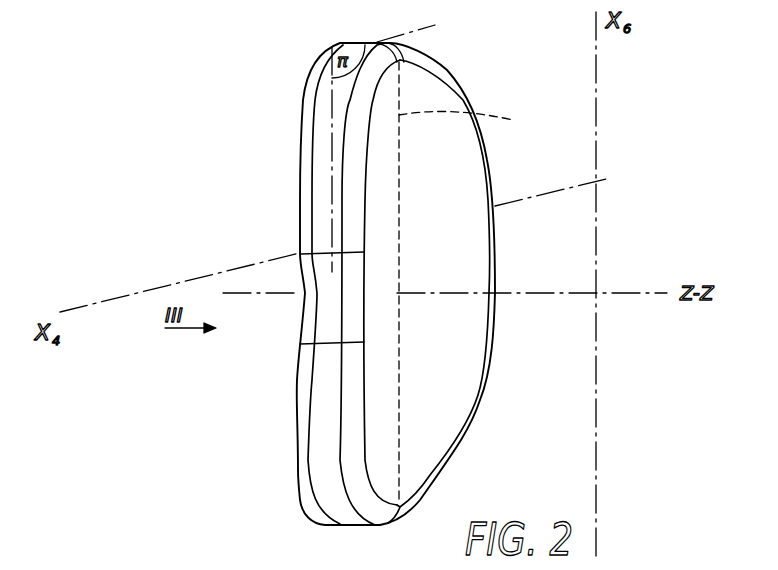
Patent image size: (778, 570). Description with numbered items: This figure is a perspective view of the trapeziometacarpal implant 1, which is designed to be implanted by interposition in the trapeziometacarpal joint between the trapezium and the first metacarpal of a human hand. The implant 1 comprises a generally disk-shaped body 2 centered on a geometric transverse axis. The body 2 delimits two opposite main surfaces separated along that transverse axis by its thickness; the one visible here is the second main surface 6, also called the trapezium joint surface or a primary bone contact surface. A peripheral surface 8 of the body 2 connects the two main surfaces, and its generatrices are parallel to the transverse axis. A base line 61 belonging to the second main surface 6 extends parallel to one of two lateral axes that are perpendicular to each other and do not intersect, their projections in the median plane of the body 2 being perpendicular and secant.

The trapeziometacarpal implant 1 is at (300, 97).
The body 2 is at (297, 175).
The second main surface 6 is at (420, 417).
The base line 61 is at (508, 119).
The peripheral surface 8 is at (347, 472).